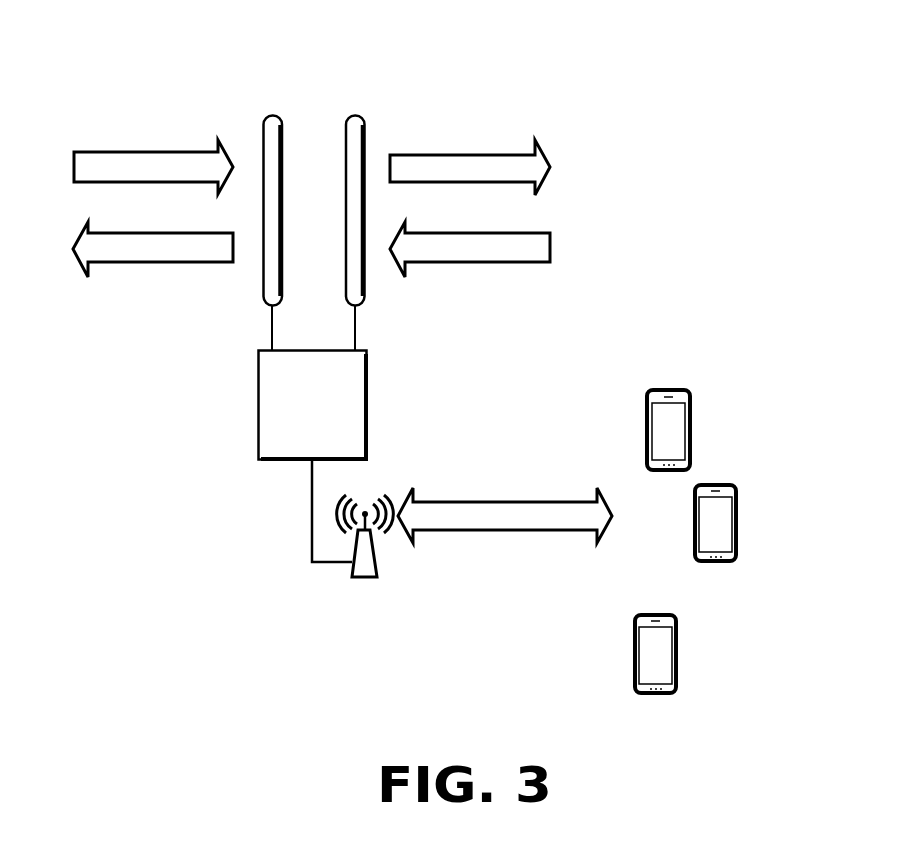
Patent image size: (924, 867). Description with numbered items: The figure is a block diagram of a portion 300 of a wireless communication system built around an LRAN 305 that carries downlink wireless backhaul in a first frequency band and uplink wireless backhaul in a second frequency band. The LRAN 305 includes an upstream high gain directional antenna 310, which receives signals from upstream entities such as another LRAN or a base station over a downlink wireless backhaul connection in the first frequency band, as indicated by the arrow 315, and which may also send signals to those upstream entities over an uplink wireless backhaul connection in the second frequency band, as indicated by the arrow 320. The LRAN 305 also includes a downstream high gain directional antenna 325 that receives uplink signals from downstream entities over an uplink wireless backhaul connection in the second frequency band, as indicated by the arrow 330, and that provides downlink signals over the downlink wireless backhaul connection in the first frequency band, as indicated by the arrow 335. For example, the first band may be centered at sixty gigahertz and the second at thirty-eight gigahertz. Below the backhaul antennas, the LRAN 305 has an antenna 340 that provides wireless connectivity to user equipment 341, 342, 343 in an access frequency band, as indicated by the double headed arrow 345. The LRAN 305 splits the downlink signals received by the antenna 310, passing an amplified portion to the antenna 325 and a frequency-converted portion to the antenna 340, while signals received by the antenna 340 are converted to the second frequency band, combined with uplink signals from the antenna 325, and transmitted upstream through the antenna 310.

The portion of a wireless communication system 300 is at (803, 89).
The LRAN 305 is at (257, 405).
The upstream high gain directional antenna 310 is at (261, 140).
The arrow 315 is at (155, 150).
The arrow 320 is at (127, 263).
The downstream high gain directional antenna 325 is at (367, 140).
The arrow 330 is at (443, 263).
The arrow 335 is at (495, 153).
The antenna 340 is at (365, 579).
The user equipment 341 is at (693, 430).
The user equipment 342 is at (739, 523).
The user equipment 343 is at (679, 655).
The double headed arrow 345 is at (523, 499).